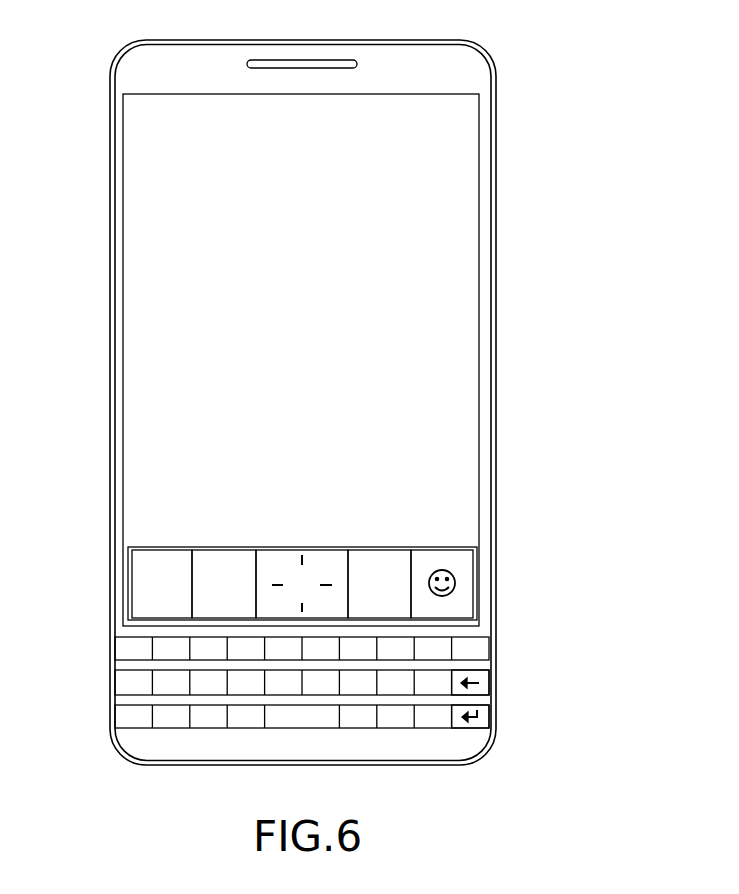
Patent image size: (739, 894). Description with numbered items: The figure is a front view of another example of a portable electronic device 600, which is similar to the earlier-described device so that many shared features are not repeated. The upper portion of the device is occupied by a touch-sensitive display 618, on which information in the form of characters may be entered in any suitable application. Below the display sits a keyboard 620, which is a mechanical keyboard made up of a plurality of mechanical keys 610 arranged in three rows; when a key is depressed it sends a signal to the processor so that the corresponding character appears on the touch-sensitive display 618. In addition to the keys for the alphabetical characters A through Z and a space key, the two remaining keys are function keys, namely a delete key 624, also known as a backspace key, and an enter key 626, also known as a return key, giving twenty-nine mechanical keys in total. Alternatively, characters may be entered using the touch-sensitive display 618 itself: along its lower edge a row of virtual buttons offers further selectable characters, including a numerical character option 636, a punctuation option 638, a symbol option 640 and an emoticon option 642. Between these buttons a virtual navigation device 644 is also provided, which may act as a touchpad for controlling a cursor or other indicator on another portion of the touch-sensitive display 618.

The portable electronic device 600 is at (583, 34).
The touch-sensitive display 618 is at (445, 242).
The mechanical keys 610 is at (122, 650).
The keyboard 620 is at (479, 641).
The delete key 624 is at (485, 688).
The enter key 626 is at (482, 722).
The numerical character option 636 is at (140, 585).
The punctuation option 638 is at (218, 555).
The virtual navigation device 644 is at (313, 553).
The symbol option 640 is at (385, 555).
The emoticon option 642 is at (445, 558).